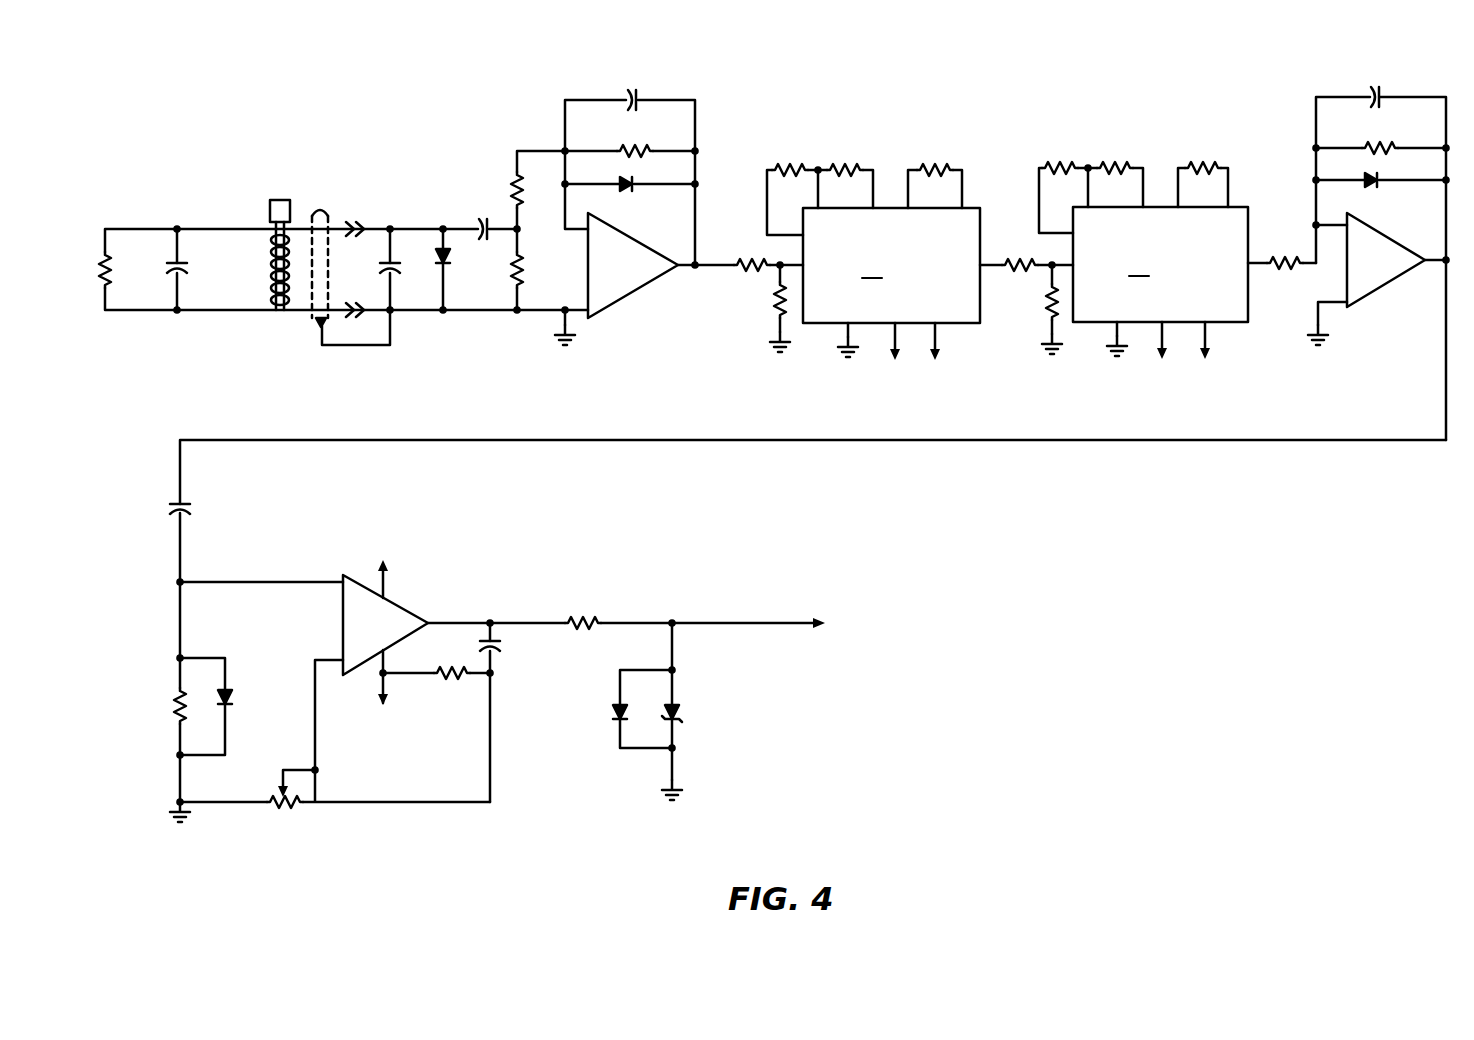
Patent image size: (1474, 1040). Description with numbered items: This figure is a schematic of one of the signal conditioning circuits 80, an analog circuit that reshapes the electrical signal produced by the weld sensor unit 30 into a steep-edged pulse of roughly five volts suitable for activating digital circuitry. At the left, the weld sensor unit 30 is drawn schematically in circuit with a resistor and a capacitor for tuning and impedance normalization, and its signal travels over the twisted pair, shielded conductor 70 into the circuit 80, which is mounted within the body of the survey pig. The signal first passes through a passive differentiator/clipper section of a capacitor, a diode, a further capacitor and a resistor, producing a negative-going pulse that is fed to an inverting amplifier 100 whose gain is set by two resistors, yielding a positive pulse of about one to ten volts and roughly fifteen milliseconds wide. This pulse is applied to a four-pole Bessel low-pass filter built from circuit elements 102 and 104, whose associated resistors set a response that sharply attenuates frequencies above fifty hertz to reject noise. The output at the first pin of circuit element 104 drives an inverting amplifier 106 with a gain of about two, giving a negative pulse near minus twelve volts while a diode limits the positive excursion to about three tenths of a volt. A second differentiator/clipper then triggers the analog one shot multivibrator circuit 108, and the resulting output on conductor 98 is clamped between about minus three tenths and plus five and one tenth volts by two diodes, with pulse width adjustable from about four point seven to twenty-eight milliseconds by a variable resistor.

The weld sensor unit 30 is at (282, 200).
The twisted pair, shielded conductor 70 is at (322, 332).
The signal conditioning circuit 80 is at (774, 448).
The conductor 98 is at (746, 623).
The inverting amplifier 100 is at (640, 300).
The circuit element of Bessel low pass filter 102 is at (810, 323).
The circuit element of Bessel low pass filter 104 is at (1082, 322).
The inverting amplifier 106 is at (1378, 290).
The analog one shot multivibrator circuit 108 is at (418, 608).